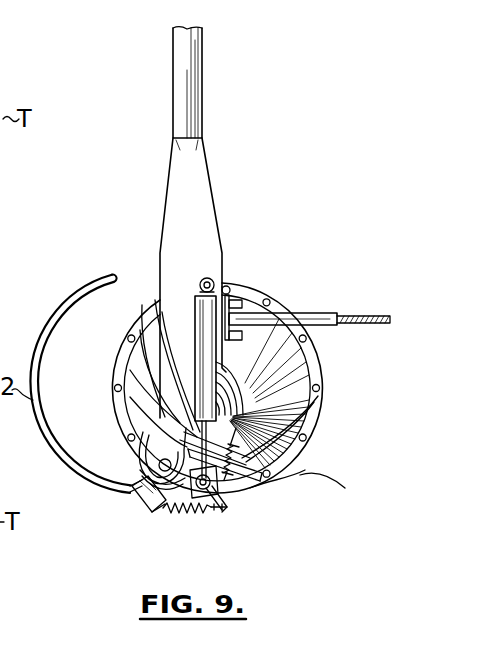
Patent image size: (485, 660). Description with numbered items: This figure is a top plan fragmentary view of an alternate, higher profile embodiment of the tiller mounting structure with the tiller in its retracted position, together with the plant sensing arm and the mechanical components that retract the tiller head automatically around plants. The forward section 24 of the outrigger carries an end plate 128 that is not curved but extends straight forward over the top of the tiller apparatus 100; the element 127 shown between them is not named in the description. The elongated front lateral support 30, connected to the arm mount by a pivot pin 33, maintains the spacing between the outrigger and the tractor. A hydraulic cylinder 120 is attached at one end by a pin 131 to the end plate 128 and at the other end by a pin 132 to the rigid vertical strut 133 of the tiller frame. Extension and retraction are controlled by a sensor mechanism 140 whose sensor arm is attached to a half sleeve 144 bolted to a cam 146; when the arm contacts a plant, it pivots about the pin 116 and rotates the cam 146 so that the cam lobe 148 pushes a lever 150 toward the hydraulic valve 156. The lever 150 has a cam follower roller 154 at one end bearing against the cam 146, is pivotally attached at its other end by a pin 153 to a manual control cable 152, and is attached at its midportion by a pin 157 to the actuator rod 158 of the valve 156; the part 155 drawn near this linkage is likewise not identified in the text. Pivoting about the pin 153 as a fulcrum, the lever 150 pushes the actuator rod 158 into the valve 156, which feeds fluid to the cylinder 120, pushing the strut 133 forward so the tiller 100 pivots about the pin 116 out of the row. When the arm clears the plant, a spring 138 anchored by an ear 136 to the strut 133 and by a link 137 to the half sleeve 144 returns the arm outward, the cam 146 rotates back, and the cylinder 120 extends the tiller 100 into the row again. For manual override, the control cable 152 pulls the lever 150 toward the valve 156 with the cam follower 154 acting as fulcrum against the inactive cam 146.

The forward section 24 is at (203, 100).
The tapered fork blade 127 is at (205, 173).
The end plate 128 is at (221, 256).
The pin 131 is at (218, 290).
The pivot pin 33 is at (243, 288).
The front lateral support 30 is at (324, 314).
The tiller apparatus 100 is at (317, 432).
The cylinder 120 is at (213, 357).
The actuator rod 158 is at (247, 387).
The cam lobe 148 is at (275, 407).
The manual control cable 152 is at (215, 441).
The pin 153 is at (215, 462).
The lever 150 is at (334, 486).
The arm 155 is at (255, 490).
The pin 132 is at (232, 478).
The ear 136 is at (222, 494).
The spring 138 is at (197, 502).
The rigid vertical strut 133 is at (162, 508).
The link 137 is at (135, 494).
The sensor mechanism 140 is at (123, 502).
The cam 146 is at (140, 452).
The half sleeve 144 is at (138, 467).
The pin 116 is at (175, 440).
The cam follower roller 154 is at (130, 387).
The pin 157 is at (133, 365).
The hydraulic valve 156 is at (141, 311).